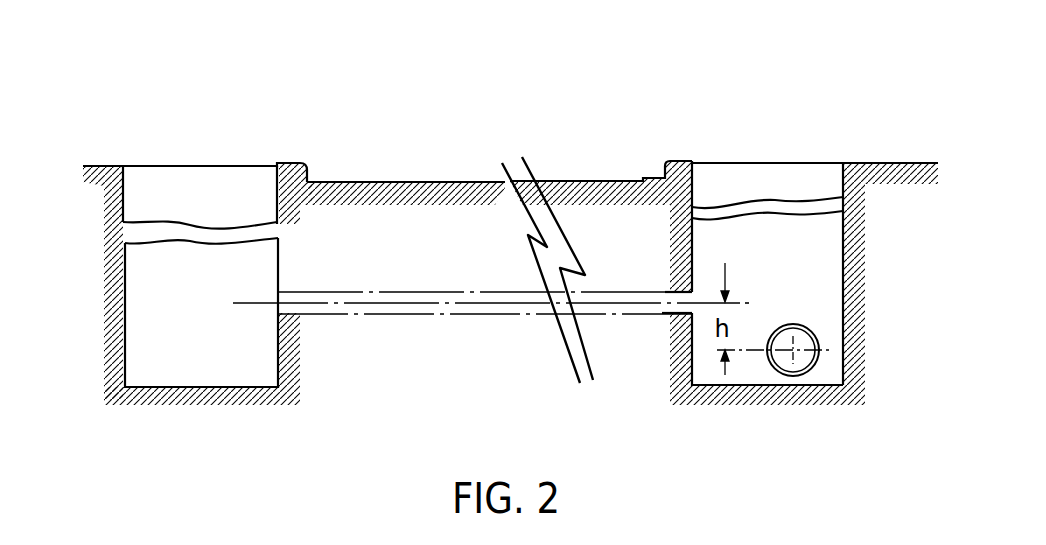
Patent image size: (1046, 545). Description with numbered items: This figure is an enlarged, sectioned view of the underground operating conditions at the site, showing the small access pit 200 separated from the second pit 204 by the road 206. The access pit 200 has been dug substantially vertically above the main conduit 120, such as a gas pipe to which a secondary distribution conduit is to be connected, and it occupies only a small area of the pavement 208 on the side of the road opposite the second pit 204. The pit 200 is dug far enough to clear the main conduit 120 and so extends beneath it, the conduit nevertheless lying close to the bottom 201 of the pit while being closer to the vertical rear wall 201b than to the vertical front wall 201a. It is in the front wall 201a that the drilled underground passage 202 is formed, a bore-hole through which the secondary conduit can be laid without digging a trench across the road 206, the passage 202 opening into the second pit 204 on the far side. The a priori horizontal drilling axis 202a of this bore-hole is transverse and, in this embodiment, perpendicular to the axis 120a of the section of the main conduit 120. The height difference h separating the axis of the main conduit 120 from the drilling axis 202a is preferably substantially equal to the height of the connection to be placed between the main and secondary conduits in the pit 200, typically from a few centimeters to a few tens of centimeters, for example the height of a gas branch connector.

The access pit 200 is at (763, 178).
The bottom of the pit 201 is at (743, 377).
The vertical front wall 201a is at (700, 248).
The vertical rear wall 201b is at (848, 268).
The drilled underground passage 202 is at (466, 315).
The horizontal drilling axis 202a is at (381, 314).
The second pit 204 is at (196, 186).
The road 206 is at (423, 182).
The pavement 208 is at (884, 163).
The main conduit 120 is at (818, 349).
The axis of the main conduit 120a is at (798, 355).